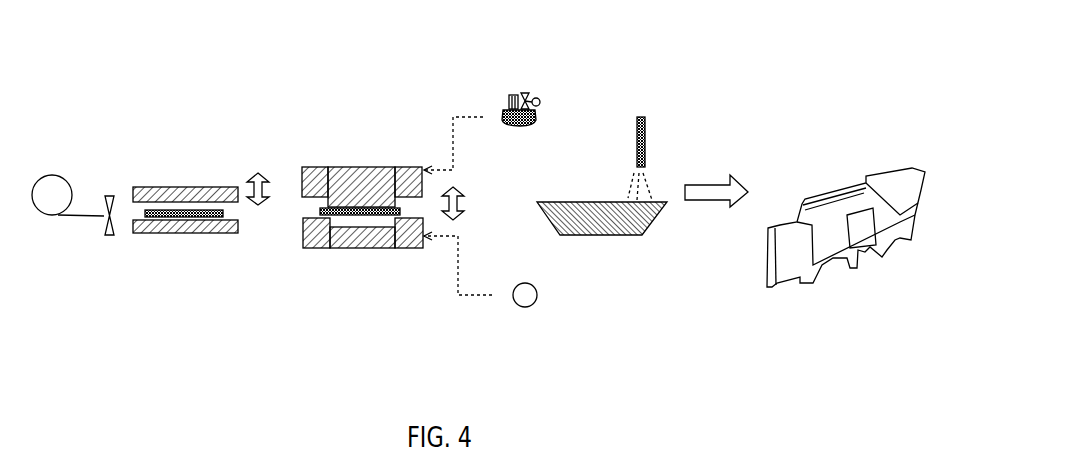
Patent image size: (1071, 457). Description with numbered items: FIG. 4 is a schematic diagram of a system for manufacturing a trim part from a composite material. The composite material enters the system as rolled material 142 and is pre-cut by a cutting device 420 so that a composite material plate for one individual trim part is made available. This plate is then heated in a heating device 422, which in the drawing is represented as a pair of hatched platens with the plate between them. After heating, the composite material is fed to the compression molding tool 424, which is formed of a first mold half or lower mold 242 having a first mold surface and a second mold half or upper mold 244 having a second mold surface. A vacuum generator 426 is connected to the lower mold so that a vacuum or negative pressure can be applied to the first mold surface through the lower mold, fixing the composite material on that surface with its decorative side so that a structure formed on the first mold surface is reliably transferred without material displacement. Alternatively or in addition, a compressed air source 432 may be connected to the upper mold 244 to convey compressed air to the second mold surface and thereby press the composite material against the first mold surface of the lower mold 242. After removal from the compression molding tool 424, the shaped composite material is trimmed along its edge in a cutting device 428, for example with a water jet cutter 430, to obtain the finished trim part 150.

The rolled material 142 is at (50, 202).
The cutting device 420 is at (109, 237).
The heating device 422 is at (201, 258).
The upper mold 244 is at (387, 167).
The lower mold 242 is at (320, 248).
The compression molding tool 424 is at (392, 240).
The vacuum generator 426 is at (523, 307).
The compressed air source 432 is at (505, 92).
The water jet cutter 430 is at (645, 132).
The cutting device 428 is at (627, 236).
The trim part 150 is at (827, 242).